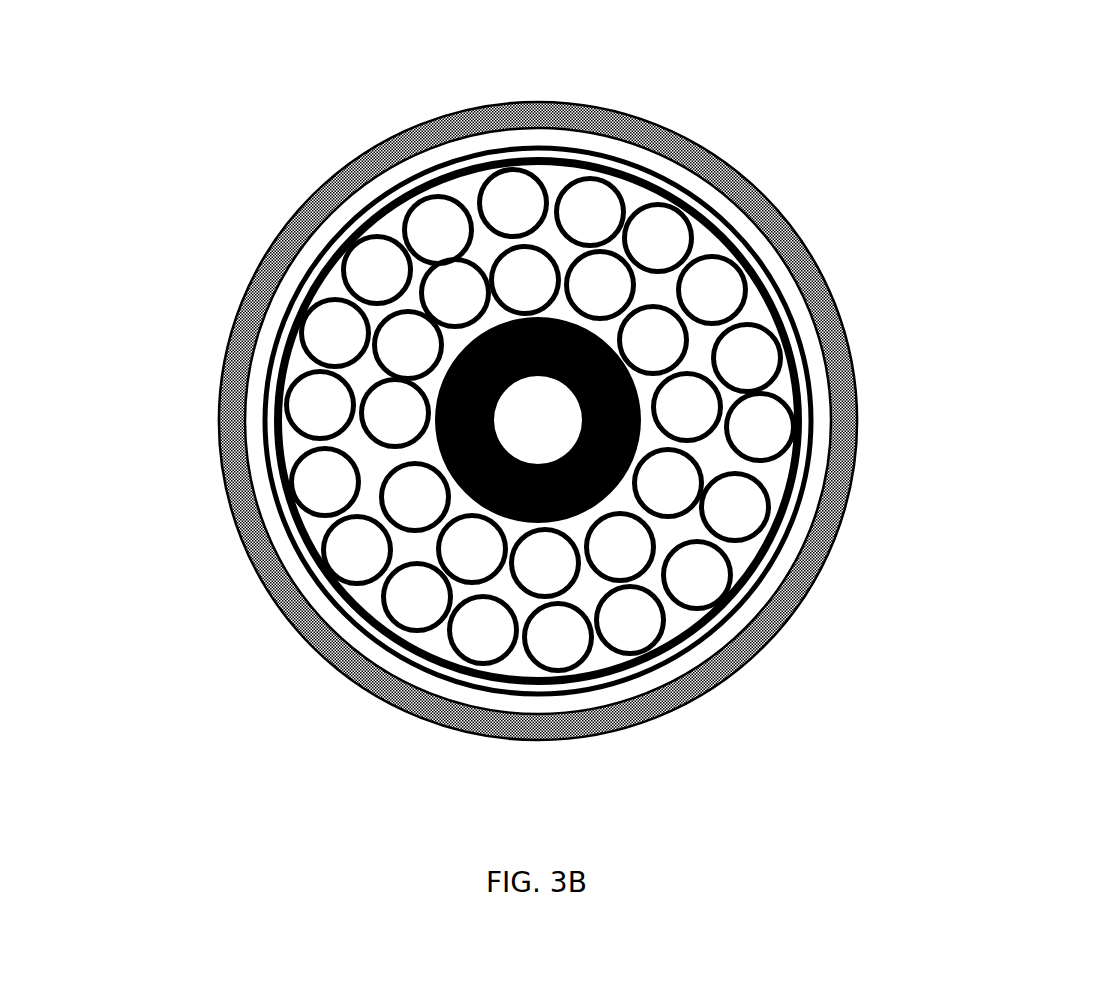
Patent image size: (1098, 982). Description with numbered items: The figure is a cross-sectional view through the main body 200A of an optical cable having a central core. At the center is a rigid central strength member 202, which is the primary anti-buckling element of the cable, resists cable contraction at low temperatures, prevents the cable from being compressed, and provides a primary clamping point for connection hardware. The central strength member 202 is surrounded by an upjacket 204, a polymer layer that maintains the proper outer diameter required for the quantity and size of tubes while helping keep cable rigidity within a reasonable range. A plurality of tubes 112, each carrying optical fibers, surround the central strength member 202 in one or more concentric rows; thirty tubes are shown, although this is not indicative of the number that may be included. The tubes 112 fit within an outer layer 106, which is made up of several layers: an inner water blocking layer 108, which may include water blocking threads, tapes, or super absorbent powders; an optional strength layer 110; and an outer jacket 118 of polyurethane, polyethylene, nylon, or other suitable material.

The main body 200A is at (226, 192).
The outer layer 106 is at (985, 355).
The water blocking layer 108 is at (797, 397).
The strength layer 110 is at (827, 460).
The outer jacket 118 is at (853, 507).
The tubes 112 is at (675, 353).
The central strength member 202 is at (561, 433).
The upjacket 204 is at (428, 413).